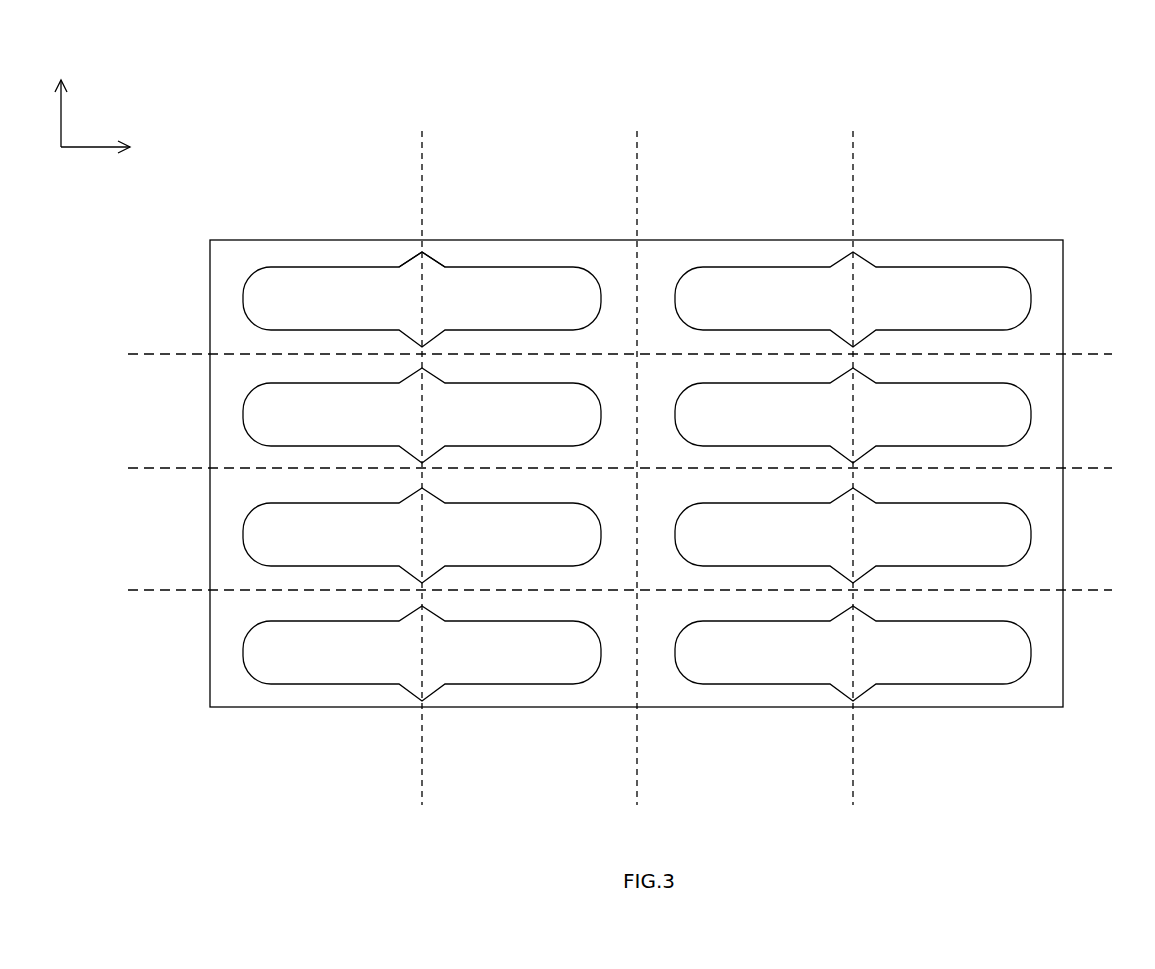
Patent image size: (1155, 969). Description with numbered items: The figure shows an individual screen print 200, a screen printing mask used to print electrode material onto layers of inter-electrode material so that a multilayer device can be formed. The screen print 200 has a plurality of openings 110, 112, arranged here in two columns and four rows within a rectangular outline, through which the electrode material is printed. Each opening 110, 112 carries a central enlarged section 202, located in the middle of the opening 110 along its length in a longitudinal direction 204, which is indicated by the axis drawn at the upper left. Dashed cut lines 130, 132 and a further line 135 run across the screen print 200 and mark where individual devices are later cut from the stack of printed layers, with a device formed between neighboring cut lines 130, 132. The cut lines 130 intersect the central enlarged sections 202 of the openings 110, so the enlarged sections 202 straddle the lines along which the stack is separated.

The screen print 200 is at (305, 108).
The central enlarged section 202 is at (408, 285).
The longitudinal direction 204 is at (110, 100).
The opening 110 is at (243, 295).
The opening 112 is at (1031, 307).
The cut line 130 is at (420, 218).
The cut line 132 is at (635, 218).
The second cut line 135 is at (851, 218).